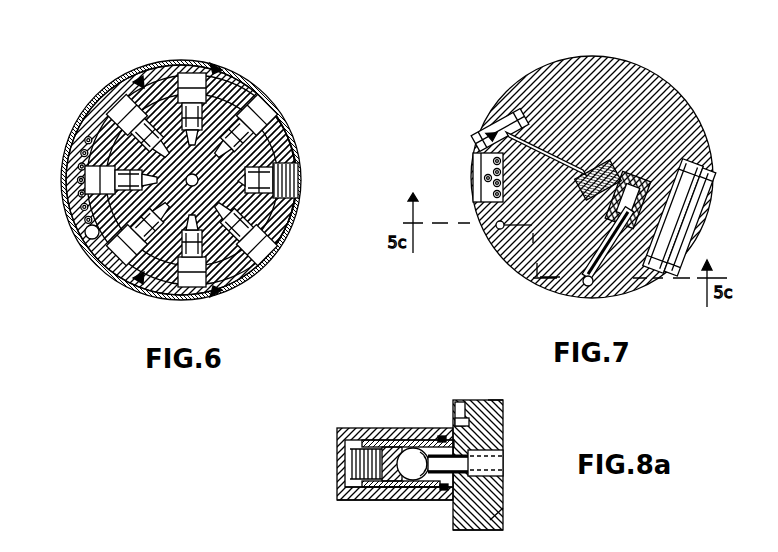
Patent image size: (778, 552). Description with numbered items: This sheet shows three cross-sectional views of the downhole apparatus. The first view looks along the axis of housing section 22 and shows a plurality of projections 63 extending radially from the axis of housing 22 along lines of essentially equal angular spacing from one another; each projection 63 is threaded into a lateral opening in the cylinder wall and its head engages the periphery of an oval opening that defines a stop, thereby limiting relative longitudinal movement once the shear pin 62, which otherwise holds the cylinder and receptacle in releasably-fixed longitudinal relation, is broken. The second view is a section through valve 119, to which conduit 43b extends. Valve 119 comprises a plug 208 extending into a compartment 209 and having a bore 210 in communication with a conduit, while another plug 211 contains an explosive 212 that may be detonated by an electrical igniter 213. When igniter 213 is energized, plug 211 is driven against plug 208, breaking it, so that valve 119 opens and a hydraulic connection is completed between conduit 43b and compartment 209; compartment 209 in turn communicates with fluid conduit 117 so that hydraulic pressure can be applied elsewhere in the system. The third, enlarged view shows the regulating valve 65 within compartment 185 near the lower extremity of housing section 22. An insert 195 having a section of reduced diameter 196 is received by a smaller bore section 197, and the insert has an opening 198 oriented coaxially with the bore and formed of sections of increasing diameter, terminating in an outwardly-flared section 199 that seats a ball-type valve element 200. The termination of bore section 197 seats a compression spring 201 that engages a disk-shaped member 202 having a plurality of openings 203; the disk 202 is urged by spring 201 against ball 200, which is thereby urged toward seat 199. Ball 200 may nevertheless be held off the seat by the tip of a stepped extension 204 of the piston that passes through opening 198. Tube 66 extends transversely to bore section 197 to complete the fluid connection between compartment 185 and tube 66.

In FIG. 6, the housing section 22 is at (298, 143).
In FIG. 6, the shear pin 62 is at (300, 182).
In FIG. 6, the projection 63 is at (188, 92).
In FIG. 7, the valve 119 is at (658, 92).
In FIG. 7, the electrical igniter 213 is at (525, 122).
In FIG. 7, the explosive 212 is at (587, 172).
In FIG. 7, the plug 211 is at (607, 177).
In FIG. 7, the compartment 209 is at (687, 170).
In FIG. 7, the plug 208 is at (612, 220).
In FIG. 7, the bore 210 is at (600, 247).
In FIG. 7, the fluid conduit 117 is at (682, 243).
In FIG. 7, the conduit 43b is at (592, 286).
In FIG. 7, the tube 66 is at (495, 233).
In FIG. 8A, the tube 66 is at (363, 460).
In FIG. 8A, the compartment 185 is at (398, 445).
In FIG. 8A, the disk-shaped member 202 is at (393, 457).
In FIG. 8A, the outwardly-flared section 199 is at (446, 461).
In FIG. 8A, the extension of piston 204 is at (463, 420).
In FIG. 8A, the section of reduced diameter 196 is at (452, 458).
In FIG. 8A, the insert 195 is at (478, 425).
In FIG. 8A, the regulating valve 65 is at (345, 484).
In FIG. 8A, the compression spring 201 is at (352, 492).
In FIG. 8A, the openings 203 is at (392, 488).
In FIG. 8A, the ball-type valve element 200 is at (417, 467).
In FIG. 8A, the smaller bore section 197 is at (430, 498).
In FIG. 8A, the opening 198 is at (483, 525).